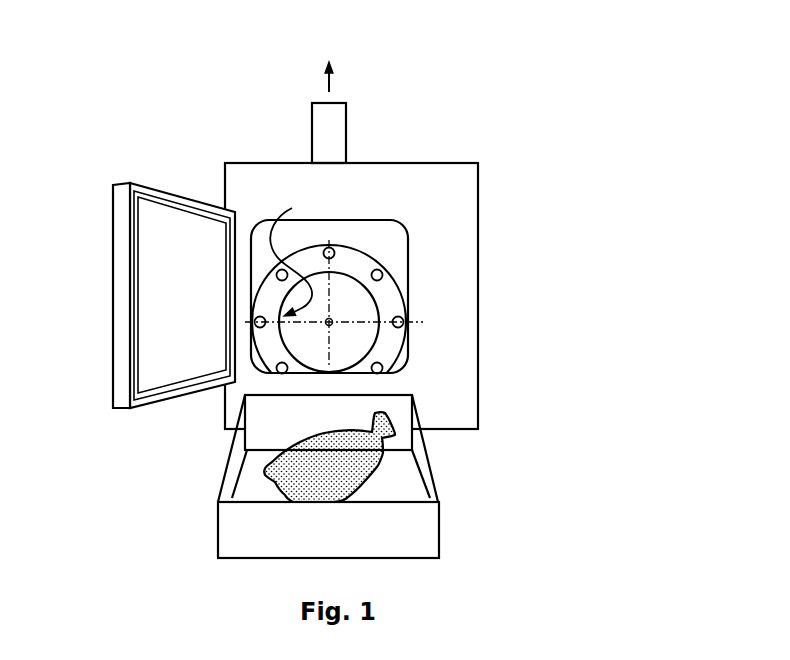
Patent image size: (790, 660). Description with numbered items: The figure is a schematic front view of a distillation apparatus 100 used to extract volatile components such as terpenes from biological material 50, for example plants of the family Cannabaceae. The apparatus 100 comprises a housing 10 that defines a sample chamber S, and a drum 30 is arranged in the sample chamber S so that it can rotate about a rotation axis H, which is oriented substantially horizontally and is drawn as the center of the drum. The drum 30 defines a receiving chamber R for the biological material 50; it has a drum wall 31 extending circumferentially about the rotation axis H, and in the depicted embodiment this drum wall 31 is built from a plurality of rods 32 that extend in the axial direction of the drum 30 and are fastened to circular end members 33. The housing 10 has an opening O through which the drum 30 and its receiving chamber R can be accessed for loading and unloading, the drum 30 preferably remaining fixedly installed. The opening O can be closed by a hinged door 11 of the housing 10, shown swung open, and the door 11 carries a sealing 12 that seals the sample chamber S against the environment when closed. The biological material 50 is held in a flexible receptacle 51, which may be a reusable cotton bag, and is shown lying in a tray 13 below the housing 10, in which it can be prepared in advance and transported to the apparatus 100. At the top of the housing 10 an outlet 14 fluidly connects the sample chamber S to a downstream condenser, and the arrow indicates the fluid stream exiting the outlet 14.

The distillation apparatus 100 is at (578, 60).
The housing 10 is at (460, 193).
The door 11 is at (122, 305).
The sealing 12 is at (135, 240).
The tray 13 is at (228, 527).
The outlet 14 is at (333, 130).
The drum 30 is at (379, 272).
The drum wall 31 is at (404, 313).
The rods 32 is at (408, 253).
The circular end members 33 is at (388, 293).
The biological material 50 is at (360, 468).
The flexible receptacle 51 is at (375, 475).
The rotation axis H is at (332, 320).
The opening O is at (291, 252).
The sample chamber S is at (309, 248).
The receiving chamber R is at (320, 358).